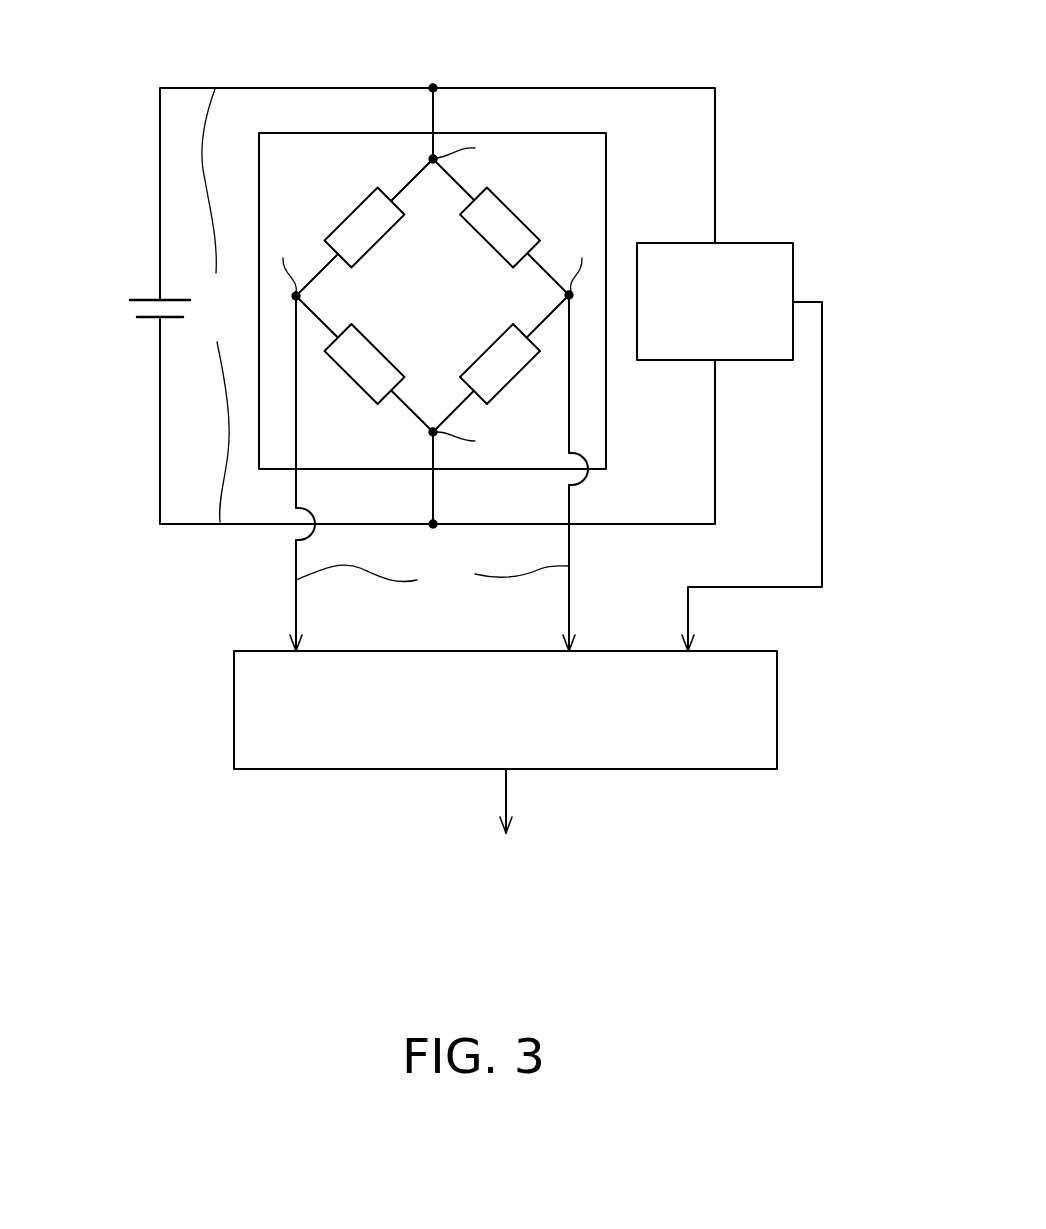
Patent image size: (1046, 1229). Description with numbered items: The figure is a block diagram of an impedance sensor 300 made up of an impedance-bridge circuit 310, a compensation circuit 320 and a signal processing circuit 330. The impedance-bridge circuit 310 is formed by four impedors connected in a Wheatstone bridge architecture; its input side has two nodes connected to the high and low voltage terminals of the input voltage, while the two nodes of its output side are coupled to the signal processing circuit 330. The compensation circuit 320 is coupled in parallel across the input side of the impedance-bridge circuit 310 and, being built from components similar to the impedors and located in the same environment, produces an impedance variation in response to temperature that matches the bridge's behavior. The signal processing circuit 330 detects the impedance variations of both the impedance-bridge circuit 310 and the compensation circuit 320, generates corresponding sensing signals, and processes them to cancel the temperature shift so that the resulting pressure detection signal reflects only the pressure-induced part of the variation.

The impedance sensor 300 is at (880, 922).
The impedance-bridge circuit 310 is at (545, 132).
The compensation circuit 320 is at (757, 243).
The signal processing circuit 330 is at (777, 708).